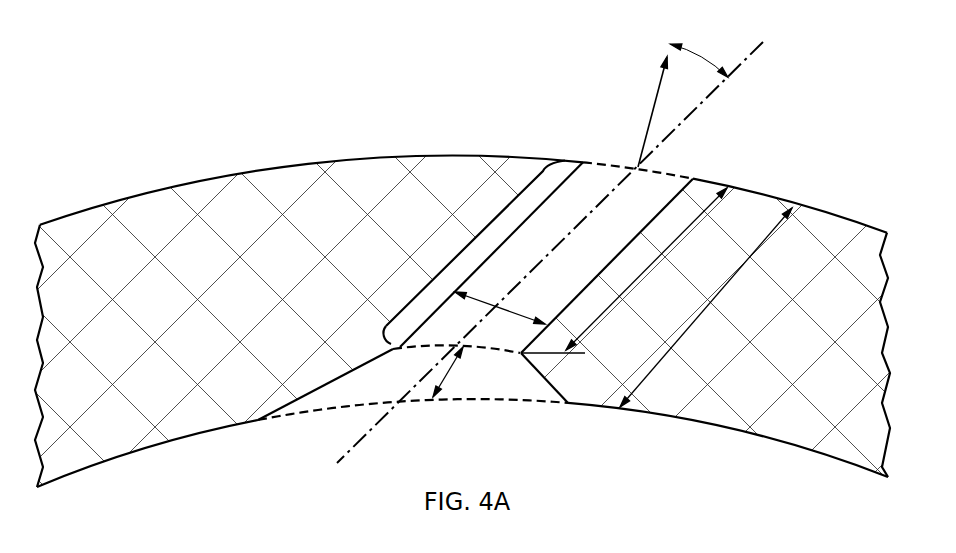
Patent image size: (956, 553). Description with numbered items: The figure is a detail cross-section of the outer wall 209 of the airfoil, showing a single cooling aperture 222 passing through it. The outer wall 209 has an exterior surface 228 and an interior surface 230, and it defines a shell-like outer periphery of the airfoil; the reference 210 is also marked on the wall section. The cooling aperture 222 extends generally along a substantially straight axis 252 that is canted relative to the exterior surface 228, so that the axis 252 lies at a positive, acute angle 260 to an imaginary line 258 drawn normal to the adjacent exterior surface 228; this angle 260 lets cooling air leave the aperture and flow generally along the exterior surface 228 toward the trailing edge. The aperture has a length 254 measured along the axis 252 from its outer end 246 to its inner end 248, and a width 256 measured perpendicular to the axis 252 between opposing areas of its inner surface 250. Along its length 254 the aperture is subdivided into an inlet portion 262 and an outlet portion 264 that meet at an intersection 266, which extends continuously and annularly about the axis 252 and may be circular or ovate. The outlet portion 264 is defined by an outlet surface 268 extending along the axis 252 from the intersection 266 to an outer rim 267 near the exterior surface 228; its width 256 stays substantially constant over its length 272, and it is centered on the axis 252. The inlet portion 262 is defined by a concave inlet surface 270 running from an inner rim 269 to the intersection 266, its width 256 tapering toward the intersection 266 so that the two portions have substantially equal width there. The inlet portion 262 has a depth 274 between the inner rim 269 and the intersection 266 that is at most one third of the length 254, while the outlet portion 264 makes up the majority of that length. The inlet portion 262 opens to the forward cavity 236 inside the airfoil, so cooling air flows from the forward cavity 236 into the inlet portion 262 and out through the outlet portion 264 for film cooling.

The outer wall 209 is at (478, 276).
The rim 210 is at (857, 238).
The cooling aperture 222 is at (629, 110).
The exterior surface 228 is at (812, 206).
The interior surface 230 is at (853, 467).
The forward cavity 236 is at (383, 457).
The outer end 246 is at (673, 176).
The inner end 248 is at (488, 398).
The inner surface 250 is at (558, 196).
The axis 252 is at (758, 50).
The length 254 is at (647, 377).
The width 256 is at (520, 313).
The imaginary line 258 is at (658, 80).
The angle 260 is at (700, 53).
The inlet portion 262 is at (325, 417).
The outlet portion 264 is at (476, 241).
The intersection 266 is at (393, 350).
The outer rim 267 is at (695, 179).
The outlet surface 268 is at (653, 223).
The inner rim 269 is at (262, 420).
The inlet surface 270 is at (550, 387).
The length 272 is at (712, 205).
The depth 274 is at (452, 371).